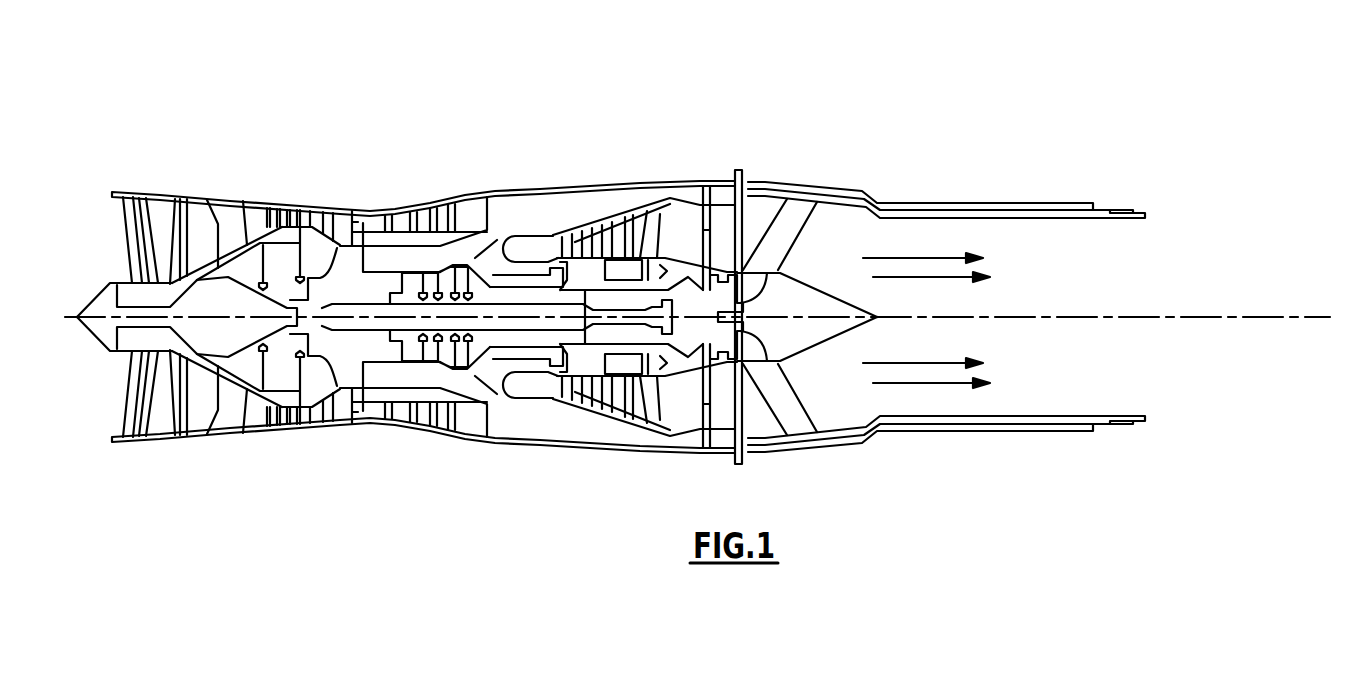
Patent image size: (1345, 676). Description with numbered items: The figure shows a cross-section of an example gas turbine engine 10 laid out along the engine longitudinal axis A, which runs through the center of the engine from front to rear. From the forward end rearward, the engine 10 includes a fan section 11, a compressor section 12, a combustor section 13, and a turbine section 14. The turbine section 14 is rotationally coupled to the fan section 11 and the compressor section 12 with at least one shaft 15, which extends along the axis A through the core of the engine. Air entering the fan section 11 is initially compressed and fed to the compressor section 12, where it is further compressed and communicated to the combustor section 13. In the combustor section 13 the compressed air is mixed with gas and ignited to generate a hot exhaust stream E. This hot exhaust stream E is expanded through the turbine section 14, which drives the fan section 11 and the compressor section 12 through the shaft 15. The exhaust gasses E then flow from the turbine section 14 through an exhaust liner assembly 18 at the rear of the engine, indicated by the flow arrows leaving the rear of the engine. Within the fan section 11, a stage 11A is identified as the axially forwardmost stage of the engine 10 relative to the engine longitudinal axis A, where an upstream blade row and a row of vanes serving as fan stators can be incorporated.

The gas turbine engine 10 is at (876, 66).
The fan section 11 is at (332, 124).
The stage 11A is at (245, 451).
The compressor section 12 is at (505, 124).
The combustor section 13 is at (590, 124).
The turbine section 14 is at (767, 124).
The shaft 15 is at (363, 335).
The exhaust liner assembly 18 is at (770, 124).
The engine longitudinal axis A is at (1308, 317).
The hot exhaust stream E is at (937, 393).